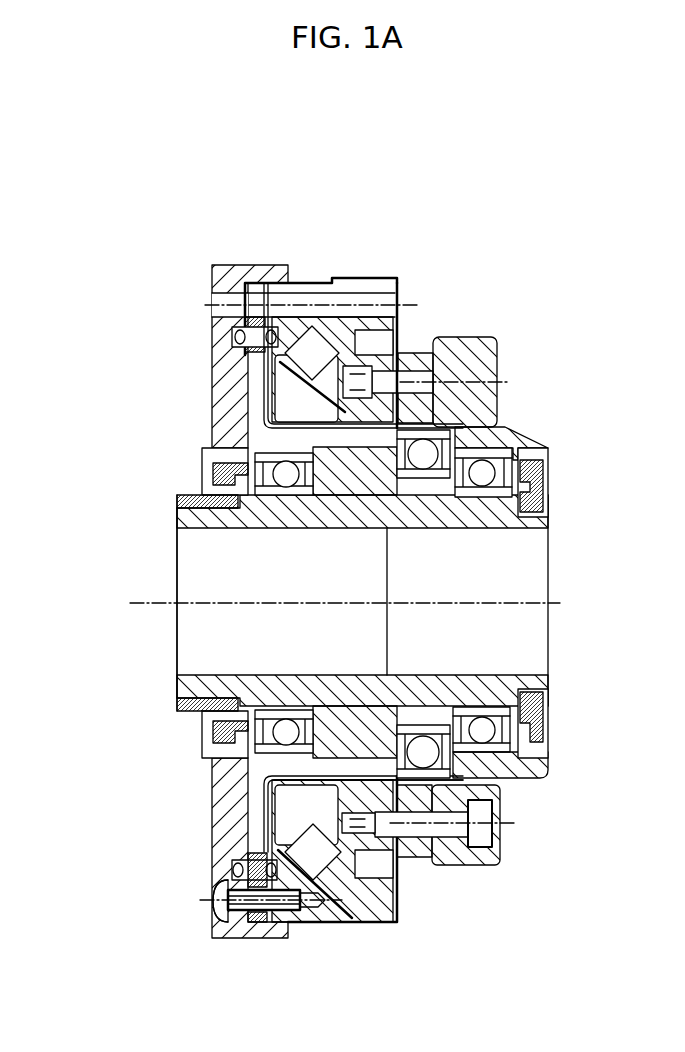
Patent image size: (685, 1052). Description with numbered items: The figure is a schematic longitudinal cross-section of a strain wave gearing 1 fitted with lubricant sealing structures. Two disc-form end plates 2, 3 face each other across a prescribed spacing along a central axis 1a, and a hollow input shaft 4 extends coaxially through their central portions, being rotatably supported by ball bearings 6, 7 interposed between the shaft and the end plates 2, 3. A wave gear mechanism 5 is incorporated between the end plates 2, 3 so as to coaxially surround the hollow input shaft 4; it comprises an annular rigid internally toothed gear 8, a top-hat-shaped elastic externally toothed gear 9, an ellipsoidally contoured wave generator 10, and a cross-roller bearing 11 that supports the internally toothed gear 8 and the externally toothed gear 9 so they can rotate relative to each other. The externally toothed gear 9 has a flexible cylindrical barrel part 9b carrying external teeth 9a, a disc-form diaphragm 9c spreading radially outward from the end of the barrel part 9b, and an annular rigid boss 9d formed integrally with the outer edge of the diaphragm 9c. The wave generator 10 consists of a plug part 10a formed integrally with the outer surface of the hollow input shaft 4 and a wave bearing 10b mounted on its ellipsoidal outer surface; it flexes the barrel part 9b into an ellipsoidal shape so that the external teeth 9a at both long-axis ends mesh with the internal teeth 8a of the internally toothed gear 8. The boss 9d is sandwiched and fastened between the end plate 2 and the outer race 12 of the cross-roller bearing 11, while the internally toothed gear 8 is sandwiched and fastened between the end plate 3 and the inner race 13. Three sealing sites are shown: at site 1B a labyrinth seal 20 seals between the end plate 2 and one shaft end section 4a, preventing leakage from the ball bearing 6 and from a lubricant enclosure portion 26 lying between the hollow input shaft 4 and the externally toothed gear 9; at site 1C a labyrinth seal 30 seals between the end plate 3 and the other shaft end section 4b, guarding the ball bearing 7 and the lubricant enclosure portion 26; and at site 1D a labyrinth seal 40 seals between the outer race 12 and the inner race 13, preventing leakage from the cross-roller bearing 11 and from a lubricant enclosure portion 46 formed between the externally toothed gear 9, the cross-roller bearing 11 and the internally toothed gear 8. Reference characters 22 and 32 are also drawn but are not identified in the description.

The strain wave gearing 1 is at (103, 258).
The central axis 1a is at (147, 606).
The site 1B is at (198, 401).
The site 1C is at (534, 427).
The site 1D is at (323, 308).
The end plate 2 is at (213, 272).
The end plate 3 is at (500, 402).
The hollow input shaft 4 is at (556, 687).
The shaft end section 4a is at (220, 522).
The shaft end section 4b is at (512, 524).
The wave gear mechanism 5 is at (418, 332).
The ball bearing 6 is at (292, 500).
The ball bearing 7 is at (415, 480).
The internally toothed gear 8 is at (433, 865).
The internal teeth 8a is at (415, 790).
The externally toothed gear 9 is at (338, 757).
The external teeth 9a is at (450, 840).
The cylindrical barrel part 9b is at (347, 777).
The diaphragm 9c is at (288, 812).
The boss 9d is at (215, 893).
The wave generator 10 is at (470, 767).
The plug part 10a is at (425, 750).
The wave bearing 10b is at (463, 770).
The cross-roller bearing 11 is at (199, 851).
The outer race 12 is at (268, 893).
The inner race 13 is at (258, 870).
The labyrinth seal 20 is at (183, 500).
The second seal 22 is at (213, 474).
The lubricant enclosure portion 26 is at (344, 470).
The labyrinth seal 30 is at (549, 490).
The seal ring 32 is at (549, 470).
The labyrinth seal 40 is at (352, 418).
The lubricant enclosure portion 46 is at (300, 417).